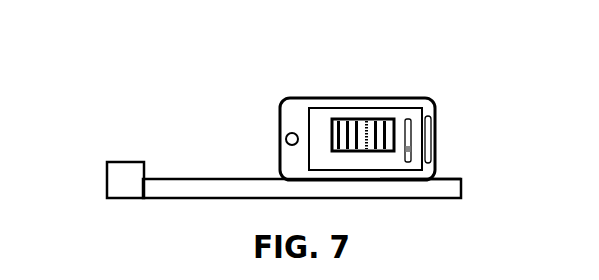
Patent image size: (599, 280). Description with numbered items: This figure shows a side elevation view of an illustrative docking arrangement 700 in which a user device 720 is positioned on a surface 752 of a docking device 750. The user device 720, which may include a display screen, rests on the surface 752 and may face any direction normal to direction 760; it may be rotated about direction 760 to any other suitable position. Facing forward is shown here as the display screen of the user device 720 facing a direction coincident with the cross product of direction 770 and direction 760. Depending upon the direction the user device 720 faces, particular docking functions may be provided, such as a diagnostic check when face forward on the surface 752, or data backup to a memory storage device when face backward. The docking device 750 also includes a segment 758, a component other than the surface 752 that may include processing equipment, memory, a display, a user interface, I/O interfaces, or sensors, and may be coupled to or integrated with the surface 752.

The docking arrangement 700 is at (320, 58).
The user device 720 is at (409, 97).
The docking device 750 is at (427, 200).
The surface 752 is at (455, 169).
The segment 758 is at (134, 205).
The direction 760 is at (176, 137).
The direction 770 is at (183, 137).